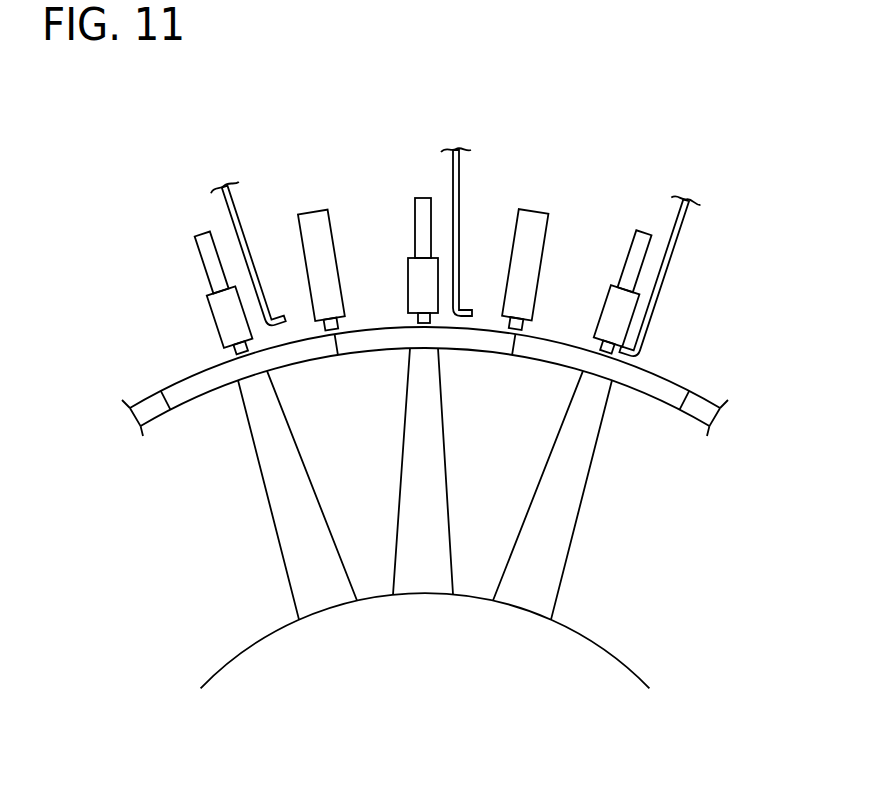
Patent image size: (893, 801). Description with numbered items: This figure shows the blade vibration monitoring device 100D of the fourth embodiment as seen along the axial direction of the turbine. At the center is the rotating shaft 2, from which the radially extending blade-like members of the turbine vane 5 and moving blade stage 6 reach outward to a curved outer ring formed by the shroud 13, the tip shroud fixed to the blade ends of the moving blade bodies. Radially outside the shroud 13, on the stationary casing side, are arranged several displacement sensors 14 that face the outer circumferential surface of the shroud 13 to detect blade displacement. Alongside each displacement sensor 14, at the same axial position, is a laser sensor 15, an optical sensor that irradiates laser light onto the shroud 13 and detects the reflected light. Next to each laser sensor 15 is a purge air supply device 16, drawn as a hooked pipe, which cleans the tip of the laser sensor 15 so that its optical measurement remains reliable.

The blade vibration monitoring device 100D is at (693, 114).
The rotating shaft 2 is at (221, 668).
The turbine vane 5 is at (477, 483).
The moving blade stage 6 is at (430, 485).
The shroud 13 is at (190, 387).
The displacement sensor 14 is at (215, 263).
The laser sensor 15 is at (313, 223).
The purge air supply device 16 is at (230, 200).